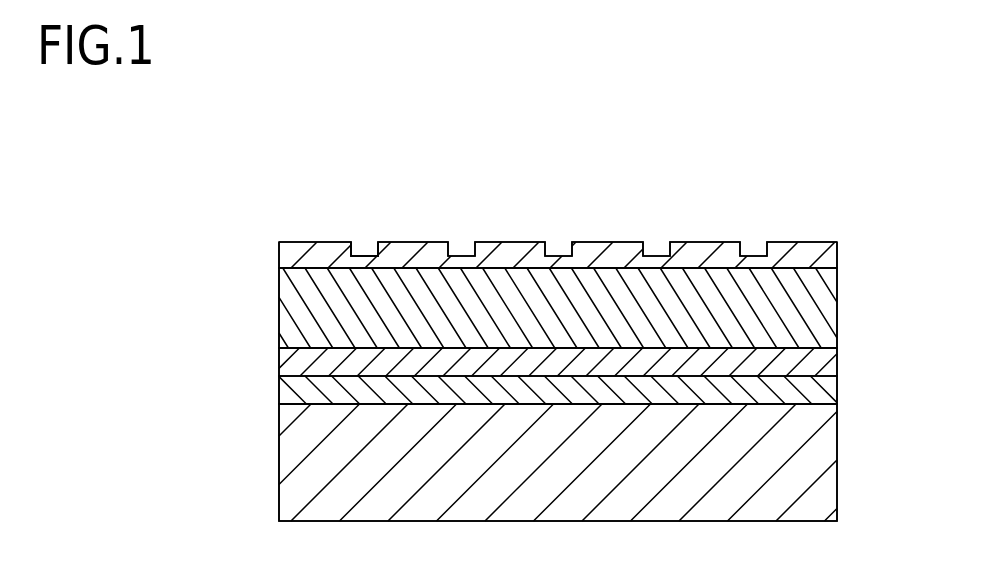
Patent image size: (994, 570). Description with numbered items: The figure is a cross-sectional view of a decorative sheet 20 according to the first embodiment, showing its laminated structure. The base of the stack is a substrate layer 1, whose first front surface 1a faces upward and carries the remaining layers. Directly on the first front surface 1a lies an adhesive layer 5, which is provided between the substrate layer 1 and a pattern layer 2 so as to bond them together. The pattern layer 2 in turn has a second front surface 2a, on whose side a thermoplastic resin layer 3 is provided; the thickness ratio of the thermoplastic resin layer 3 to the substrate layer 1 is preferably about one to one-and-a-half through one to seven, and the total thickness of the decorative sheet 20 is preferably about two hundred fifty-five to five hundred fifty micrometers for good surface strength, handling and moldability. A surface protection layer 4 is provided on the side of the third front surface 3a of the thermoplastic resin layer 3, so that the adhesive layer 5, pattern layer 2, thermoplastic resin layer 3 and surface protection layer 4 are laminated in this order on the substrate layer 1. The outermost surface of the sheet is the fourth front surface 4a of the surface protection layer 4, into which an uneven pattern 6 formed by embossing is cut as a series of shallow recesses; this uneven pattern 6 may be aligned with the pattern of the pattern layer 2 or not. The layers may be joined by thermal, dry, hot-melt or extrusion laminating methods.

The substrate layer 1 is at (837, 459).
The first front surface 1a is at (296, 403).
The pattern layer 2 is at (837, 360).
The second front surface 2a is at (296, 347).
The thermoplastic resin layer 3 is at (837, 300).
The third front surface 3a is at (296, 267).
The surface protection layer 4 is at (837, 253).
The fourth front surface 4a is at (297, 242).
The adhesive layer 5 is at (837, 391).
The uneven pattern 6 is at (362, 255).
The decorative sheet 20 is at (702, 165).